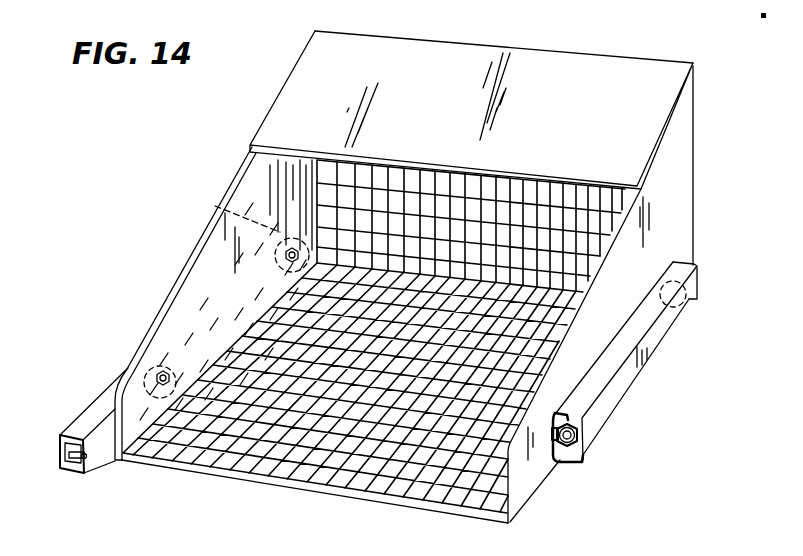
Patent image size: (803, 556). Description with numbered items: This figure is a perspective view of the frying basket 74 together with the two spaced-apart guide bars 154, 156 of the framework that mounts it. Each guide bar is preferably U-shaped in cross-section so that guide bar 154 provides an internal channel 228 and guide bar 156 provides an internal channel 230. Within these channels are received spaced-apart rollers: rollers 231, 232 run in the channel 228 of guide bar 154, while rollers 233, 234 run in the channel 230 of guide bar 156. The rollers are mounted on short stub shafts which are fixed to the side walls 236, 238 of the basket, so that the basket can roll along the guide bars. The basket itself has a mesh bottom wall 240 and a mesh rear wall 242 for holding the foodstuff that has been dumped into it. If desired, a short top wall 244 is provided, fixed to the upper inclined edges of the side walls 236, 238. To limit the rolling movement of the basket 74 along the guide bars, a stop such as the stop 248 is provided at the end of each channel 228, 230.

The frying basket 74 is at (694, 148).
The guide bar 154 is at (89, 410).
The guide bar 156 is at (610, 405).
The internal channel 228 is at (95, 446).
The internal channel 230 is at (590, 445).
The roller 231 is at (150, 370).
The roller 232 is at (215, 206).
The roller 233 is at (583, 437).
The roller 234 is at (700, 301).
The side wall 236 is at (205, 268).
The side wall 238 is at (657, 240).
The mesh bottom wall 240 is at (280, 482).
The mesh rear wall 242 is at (570, 220).
The top wall 244 is at (540, 66).
The stop 248 is at (298, 248).